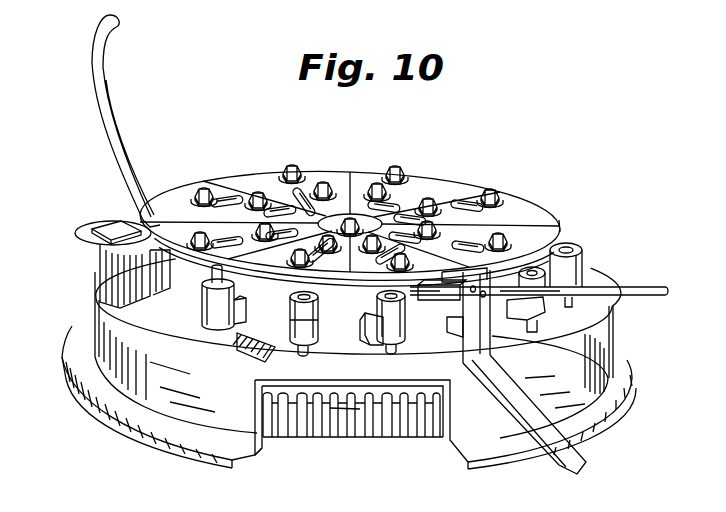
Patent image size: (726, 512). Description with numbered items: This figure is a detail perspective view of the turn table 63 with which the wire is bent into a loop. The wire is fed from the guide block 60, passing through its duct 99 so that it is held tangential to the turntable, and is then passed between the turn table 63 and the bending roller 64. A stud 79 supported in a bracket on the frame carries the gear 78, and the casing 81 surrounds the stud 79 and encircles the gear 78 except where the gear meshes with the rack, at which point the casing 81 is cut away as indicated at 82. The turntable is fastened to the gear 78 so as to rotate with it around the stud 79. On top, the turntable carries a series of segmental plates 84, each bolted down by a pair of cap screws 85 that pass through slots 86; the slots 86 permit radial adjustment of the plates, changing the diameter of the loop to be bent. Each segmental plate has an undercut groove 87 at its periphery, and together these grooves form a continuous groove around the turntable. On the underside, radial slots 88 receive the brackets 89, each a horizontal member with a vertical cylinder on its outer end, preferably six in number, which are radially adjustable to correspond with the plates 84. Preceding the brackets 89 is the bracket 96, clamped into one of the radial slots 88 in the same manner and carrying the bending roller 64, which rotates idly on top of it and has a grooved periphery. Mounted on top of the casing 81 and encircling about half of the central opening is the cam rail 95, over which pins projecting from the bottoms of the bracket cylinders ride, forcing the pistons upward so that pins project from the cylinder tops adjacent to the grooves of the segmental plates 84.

The guide block 60 is at (487, 230).
The turn table 63 is at (345, 318).
The bending roller 64 is at (88, 250).
The gear 78 is at (360, 438).
The stud 79 is at (352, 215).
The casing 81 is at (70, 372).
The cut away 82 is at (280, 447).
The segmental plates 84 is at (472, 192).
The cap screws 85 is at (323, 180).
The slots 86 is at (293, 201).
The undercut groove 87 is at (552, 243).
The radial slots 88 is at (252, 322).
The brackets 89 is at (242, 305).
The cam rail 95 is at (180, 327).
The bracket 96 is at (100, 282).
The duct 99 is at (447, 293).